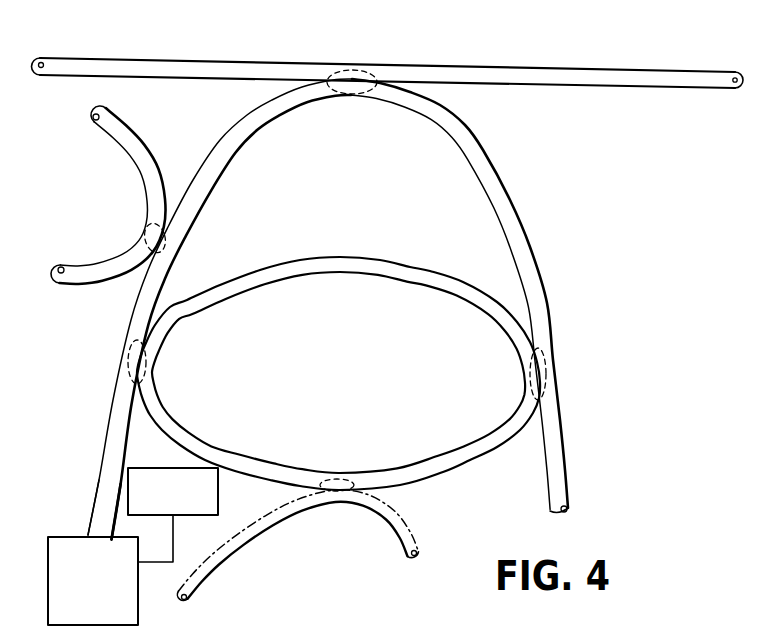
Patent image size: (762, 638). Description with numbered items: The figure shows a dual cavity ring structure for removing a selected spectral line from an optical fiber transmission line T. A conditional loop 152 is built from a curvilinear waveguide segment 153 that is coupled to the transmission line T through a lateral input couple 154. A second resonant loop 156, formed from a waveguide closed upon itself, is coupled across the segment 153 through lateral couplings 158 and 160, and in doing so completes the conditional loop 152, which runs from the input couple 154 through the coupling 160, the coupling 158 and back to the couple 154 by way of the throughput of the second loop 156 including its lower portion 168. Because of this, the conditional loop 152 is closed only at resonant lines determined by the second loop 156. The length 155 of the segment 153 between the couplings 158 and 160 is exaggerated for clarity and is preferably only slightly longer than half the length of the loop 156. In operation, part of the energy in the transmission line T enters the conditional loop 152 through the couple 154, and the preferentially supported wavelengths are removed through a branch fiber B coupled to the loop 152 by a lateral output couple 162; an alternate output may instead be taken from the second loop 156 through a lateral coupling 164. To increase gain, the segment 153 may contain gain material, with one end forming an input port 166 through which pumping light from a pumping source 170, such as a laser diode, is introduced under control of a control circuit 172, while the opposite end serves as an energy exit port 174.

The transmission line T is at (257, 65).
The branch fiber B is at (140, 130).
The conditional loop 152 is at (358, 209).
The curvilinear waveguide segment 153 is at (488, 143).
The lateral input couple 154 is at (352, 91).
The length of the segment between couples 155 is at (465, 158).
The second resonant loop 156 is at (345, 368).
The lateral coupling 158 is at (152, 364).
The lateral coupling 160 is at (532, 371).
The lateral output couple 162 is at (165, 247).
The lateral coupling 164 is at (343, 489).
The input port 166 is at (80, 525).
The lower portion of the second loop 168 is at (234, 452).
The pumping source 170 is at (93, 581).
The control circuit 172 is at (173, 515).
The energy exit port 174 is at (562, 516).